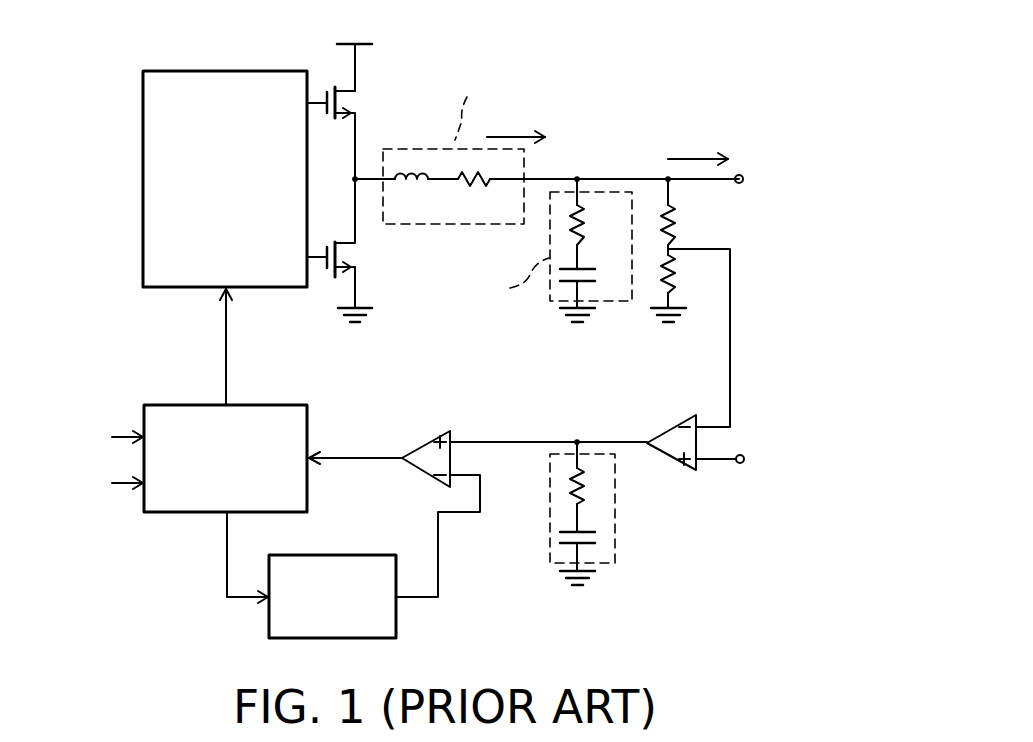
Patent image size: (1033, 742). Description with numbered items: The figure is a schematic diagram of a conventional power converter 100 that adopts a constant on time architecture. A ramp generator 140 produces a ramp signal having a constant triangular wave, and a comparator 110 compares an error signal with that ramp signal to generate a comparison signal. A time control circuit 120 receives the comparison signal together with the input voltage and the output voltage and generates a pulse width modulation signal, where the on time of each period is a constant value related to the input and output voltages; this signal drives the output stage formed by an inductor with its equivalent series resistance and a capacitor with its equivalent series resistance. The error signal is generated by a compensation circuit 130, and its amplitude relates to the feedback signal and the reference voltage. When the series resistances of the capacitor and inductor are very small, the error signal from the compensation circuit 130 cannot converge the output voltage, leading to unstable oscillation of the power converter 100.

The power converter 100 is at (784, 641).
The comparator 110 is at (428, 433).
The time control circuit 120 is at (291, 405).
The compensation circuit 130 is at (548, 520).
The ramp generator 140 is at (396, 622).